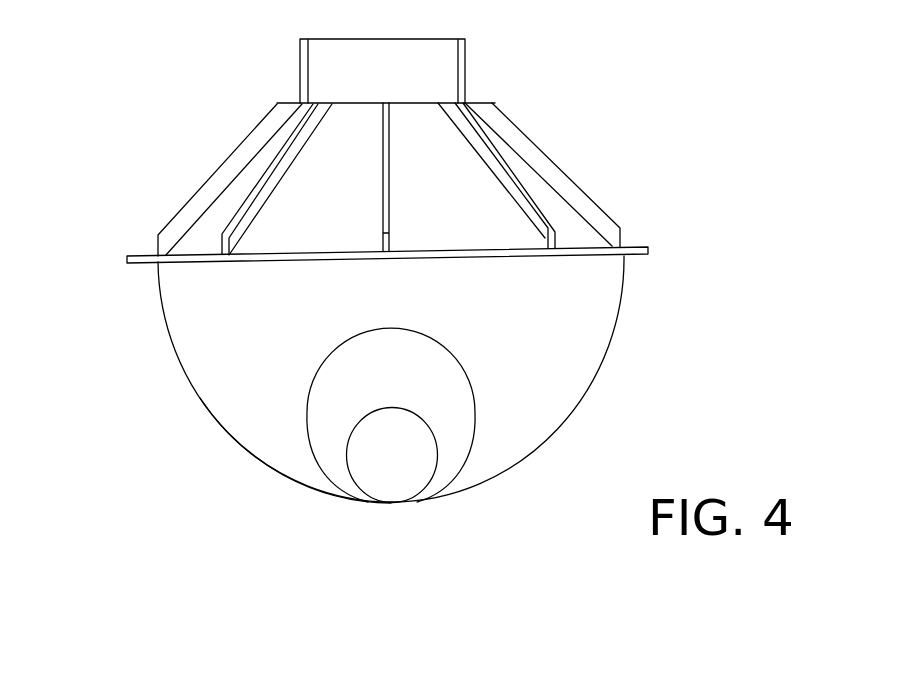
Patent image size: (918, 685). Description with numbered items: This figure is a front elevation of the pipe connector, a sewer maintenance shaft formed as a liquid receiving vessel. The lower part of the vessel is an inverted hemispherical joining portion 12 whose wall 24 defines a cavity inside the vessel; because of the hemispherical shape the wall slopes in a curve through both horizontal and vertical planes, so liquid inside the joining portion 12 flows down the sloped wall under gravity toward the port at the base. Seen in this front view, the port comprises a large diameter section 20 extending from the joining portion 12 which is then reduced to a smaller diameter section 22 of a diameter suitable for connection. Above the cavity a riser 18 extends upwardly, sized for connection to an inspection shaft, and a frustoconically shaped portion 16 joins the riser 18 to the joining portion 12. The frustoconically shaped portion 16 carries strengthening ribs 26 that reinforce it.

The hemispherical joining portion 12 is at (200, 358).
The frustoconically shaped portion 16 is at (205, 230).
The riser 18 is at (297, 68).
The large diameter section 20 is at (448, 353).
The smaller diameter section 22 is at (436, 466).
The wall 24 is at (242, 435).
The strengthening ribs 26 is at (537, 210).